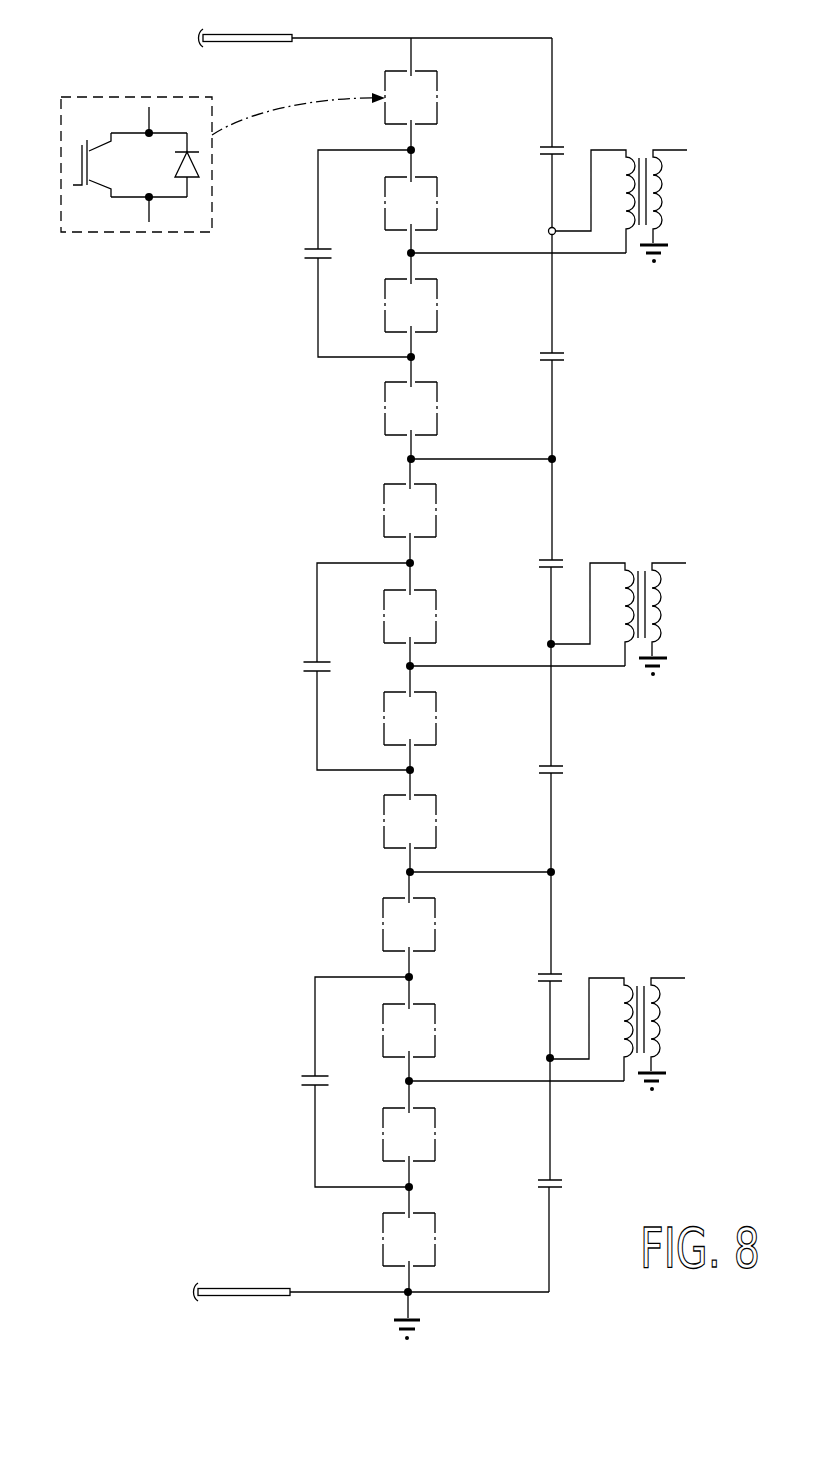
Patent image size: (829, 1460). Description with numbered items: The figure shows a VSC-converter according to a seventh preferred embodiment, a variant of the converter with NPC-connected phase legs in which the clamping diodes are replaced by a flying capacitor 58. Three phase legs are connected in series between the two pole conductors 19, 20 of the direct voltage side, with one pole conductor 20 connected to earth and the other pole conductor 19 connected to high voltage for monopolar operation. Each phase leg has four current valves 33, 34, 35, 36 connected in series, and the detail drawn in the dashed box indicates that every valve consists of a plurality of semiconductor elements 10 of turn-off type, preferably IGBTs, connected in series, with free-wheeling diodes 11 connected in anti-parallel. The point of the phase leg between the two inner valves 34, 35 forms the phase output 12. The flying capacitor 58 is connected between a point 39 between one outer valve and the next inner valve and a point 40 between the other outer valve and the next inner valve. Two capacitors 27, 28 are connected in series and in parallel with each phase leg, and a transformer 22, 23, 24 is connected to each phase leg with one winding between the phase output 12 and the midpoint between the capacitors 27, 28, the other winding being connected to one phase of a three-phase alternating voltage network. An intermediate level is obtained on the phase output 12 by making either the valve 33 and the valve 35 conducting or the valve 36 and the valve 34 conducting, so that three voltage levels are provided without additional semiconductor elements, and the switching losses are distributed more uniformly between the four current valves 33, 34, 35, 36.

The semiconductor element of turn-off type 10 is at (82, 157).
The free-wheeling diode 11 is at (199, 163).
The phase output 12 is at (489, 659).
The pole conductor 19 is at (327, 38).
The pole conductor 20 is at (316, 1292).
The transformer 22 is at (618, 190).
The transformer 23 is at (616, 603).
The transformer 24 is at (615, 1018).
The capacitor 27 is at (564, 549).
The capacitor 28 is at (564, 752).
The current valve 33 is at (163, 232).
The current valve 34 is at (395, 607).
The current valve 35 is at (430, 720).
The current valve 36 is at (395, 817).
The point 39 is at (436, 556).
The point 40 is at (436, 767).
The flying capacitor 58 is at (342, 668).